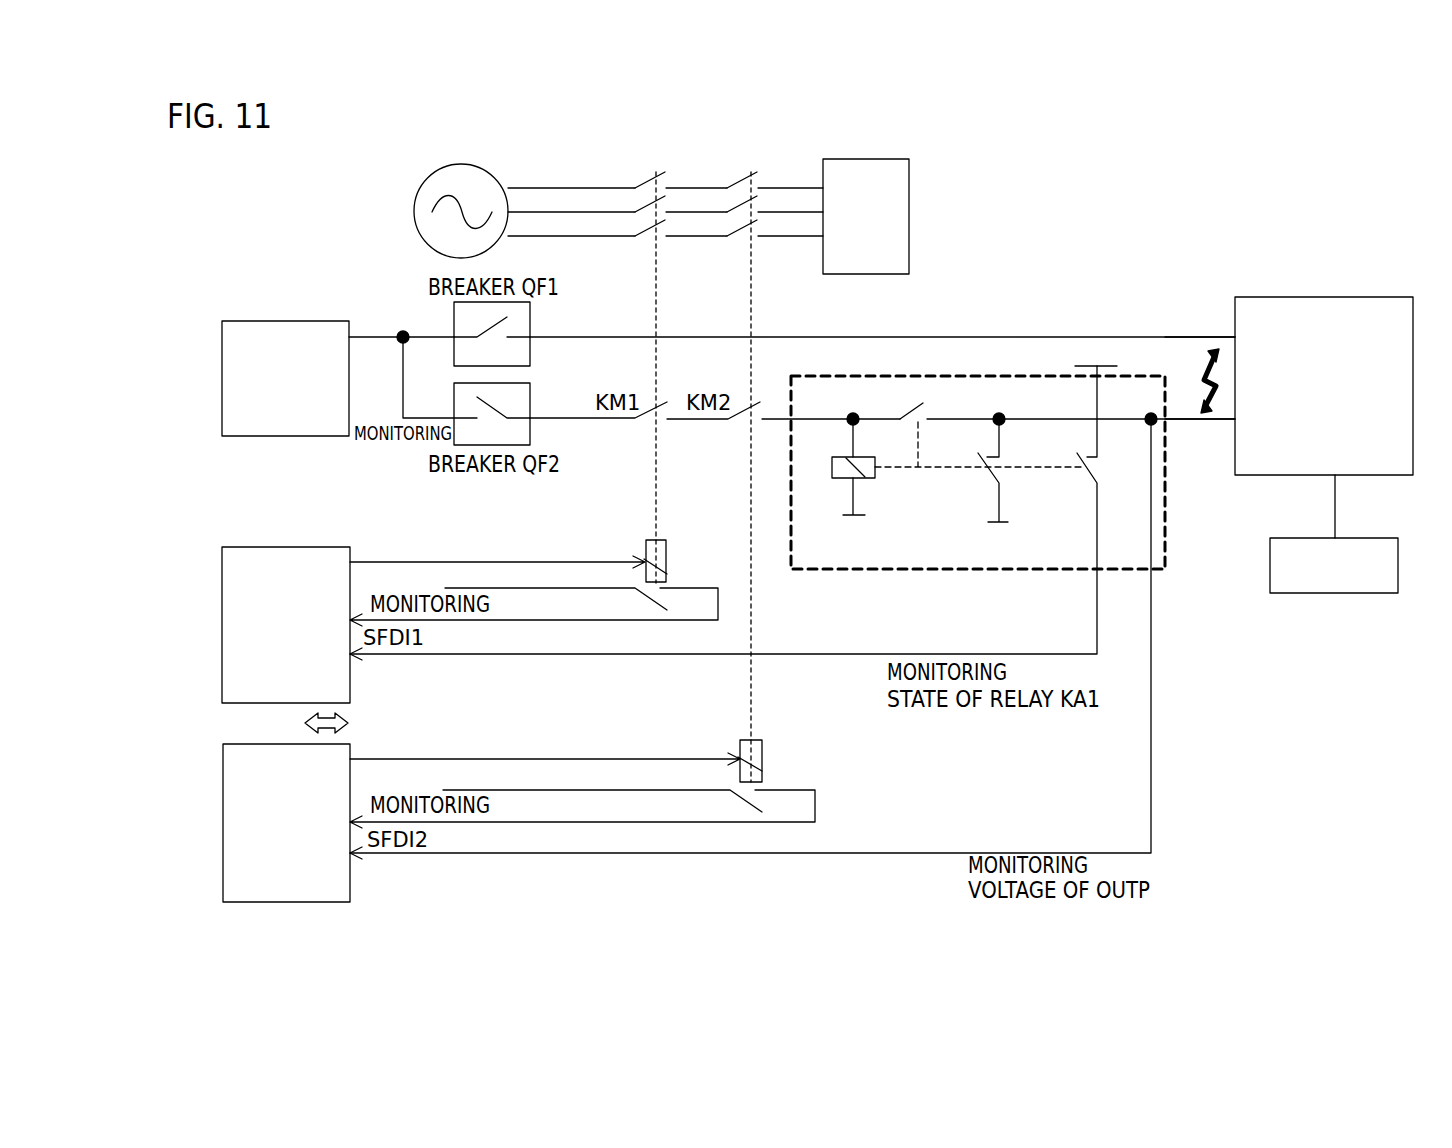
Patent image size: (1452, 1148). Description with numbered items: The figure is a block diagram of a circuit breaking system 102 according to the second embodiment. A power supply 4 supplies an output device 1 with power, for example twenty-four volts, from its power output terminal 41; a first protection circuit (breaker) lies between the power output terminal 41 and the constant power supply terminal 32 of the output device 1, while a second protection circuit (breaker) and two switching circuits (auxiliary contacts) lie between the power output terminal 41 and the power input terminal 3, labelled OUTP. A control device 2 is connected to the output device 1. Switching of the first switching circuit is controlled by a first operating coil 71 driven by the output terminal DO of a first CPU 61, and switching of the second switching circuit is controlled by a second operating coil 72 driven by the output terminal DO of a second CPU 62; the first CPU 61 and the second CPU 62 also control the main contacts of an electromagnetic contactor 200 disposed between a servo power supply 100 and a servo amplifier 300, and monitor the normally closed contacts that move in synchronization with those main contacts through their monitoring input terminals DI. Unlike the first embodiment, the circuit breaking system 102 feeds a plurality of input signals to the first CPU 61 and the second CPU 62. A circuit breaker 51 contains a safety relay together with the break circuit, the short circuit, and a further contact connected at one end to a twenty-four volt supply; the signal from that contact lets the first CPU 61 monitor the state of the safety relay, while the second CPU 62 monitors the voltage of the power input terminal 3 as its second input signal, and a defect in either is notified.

The output device 1 is at (1373, 297).
The control device 2 is at (1270, 577).
The power input terminal 3 is at (1235, 423).
The power supply 4 is at (310, 320).
The constant power supply terminal 32 is at (1235, 336).
The power output terminal 41 is at (352, 336).
The circuit breaker 51 is at (1019, 570).
The first CPU 61 is at (355, 553).
The second CPU 62 is at (355, 753).
The first operating coil 71 is at (667, 557).
The second operating coil 72 is at (762, 752).
The servo power supply 100 is at (499, 180).
The circuit breaking system 102 is at (1147, 202).
The electromagnetic contactor 200 is at (757, 180).
The servo amplifier 300 is at (909, 222).